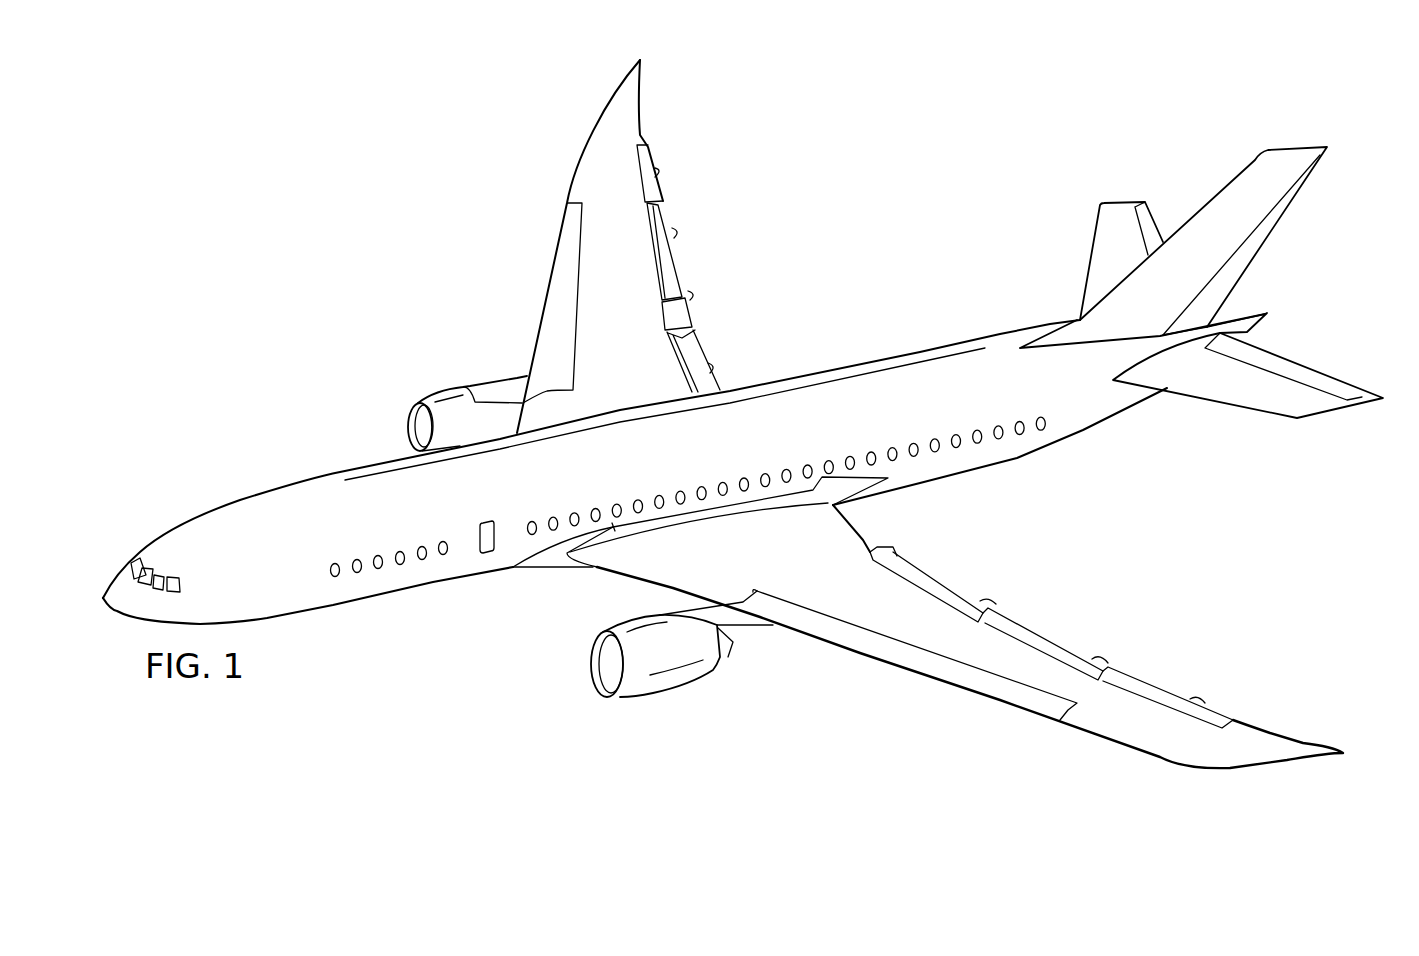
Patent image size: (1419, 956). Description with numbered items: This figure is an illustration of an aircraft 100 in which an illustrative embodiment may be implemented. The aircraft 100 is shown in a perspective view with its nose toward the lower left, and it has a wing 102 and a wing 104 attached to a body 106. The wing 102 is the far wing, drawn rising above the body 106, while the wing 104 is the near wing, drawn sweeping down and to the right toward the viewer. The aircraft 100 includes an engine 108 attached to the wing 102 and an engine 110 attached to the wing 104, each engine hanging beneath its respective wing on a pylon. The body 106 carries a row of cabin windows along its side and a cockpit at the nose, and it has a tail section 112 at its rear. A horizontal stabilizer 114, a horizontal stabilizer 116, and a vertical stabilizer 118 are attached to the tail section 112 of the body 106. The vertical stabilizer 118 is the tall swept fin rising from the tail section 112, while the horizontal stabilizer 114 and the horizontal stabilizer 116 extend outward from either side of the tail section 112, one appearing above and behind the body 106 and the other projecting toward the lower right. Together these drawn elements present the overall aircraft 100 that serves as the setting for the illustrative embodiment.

The aircraft 100 is at (395, 297).
The wing 102 is at (641, 98).
The wing 104 is at (1195, 767).
The body 106 is at (275, 488).
The engine 108 is at (448, 392).
The engine 110 is at (675, 690).
The tail section 112 is at (1155, 447).
The horizontal stabilizer 114 is at (1088, 257).
The horizontal stabilizer 116 is at (1248, 410).
The vertical stabilizer 118 is at (1275, 230).